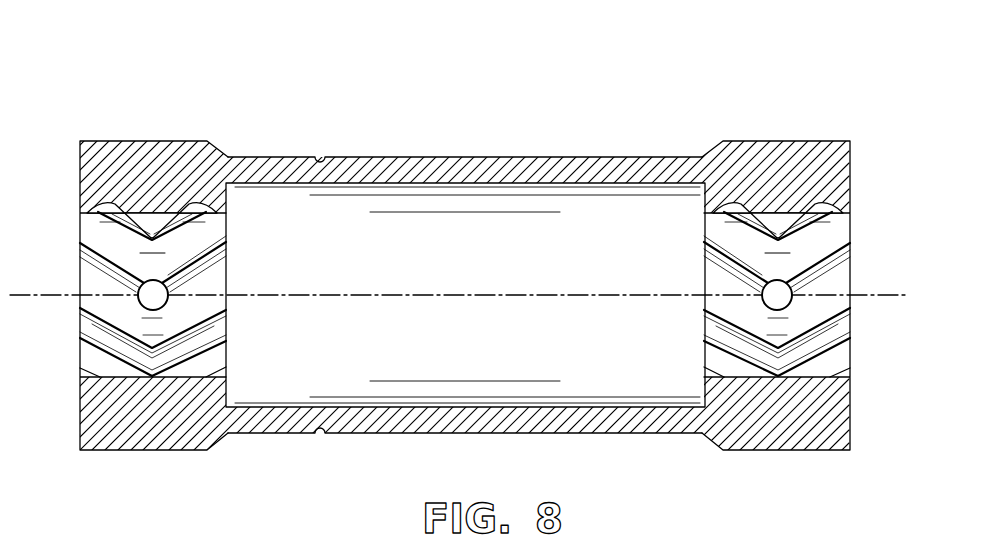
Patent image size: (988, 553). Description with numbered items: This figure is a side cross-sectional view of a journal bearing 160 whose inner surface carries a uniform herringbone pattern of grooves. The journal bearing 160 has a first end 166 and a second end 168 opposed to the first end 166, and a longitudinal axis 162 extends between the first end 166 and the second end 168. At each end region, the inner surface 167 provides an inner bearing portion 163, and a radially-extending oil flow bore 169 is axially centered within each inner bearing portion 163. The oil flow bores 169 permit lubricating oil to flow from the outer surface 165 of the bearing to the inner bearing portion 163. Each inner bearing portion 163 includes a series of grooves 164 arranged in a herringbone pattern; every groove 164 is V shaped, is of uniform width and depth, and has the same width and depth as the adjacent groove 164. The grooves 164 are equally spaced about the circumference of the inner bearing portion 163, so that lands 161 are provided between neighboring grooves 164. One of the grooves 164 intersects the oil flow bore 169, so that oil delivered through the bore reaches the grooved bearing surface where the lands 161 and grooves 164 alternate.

The journal bearing 160 is at (258, 92).
The lands 161 is at (187, 238).
The longitudinal axis 162 is at (403, 294).
The inner bearing portion 163 is at (226, 215).
The grooves 164 is at (223, 379).
The outer surface 165 is at (360, 157).
The first end 166 is at (103, 152).
The inner surface 167 is at (445, 200).
The second end 168 is at (822, 152).
The oil flow bore 169 is at (141, 306).